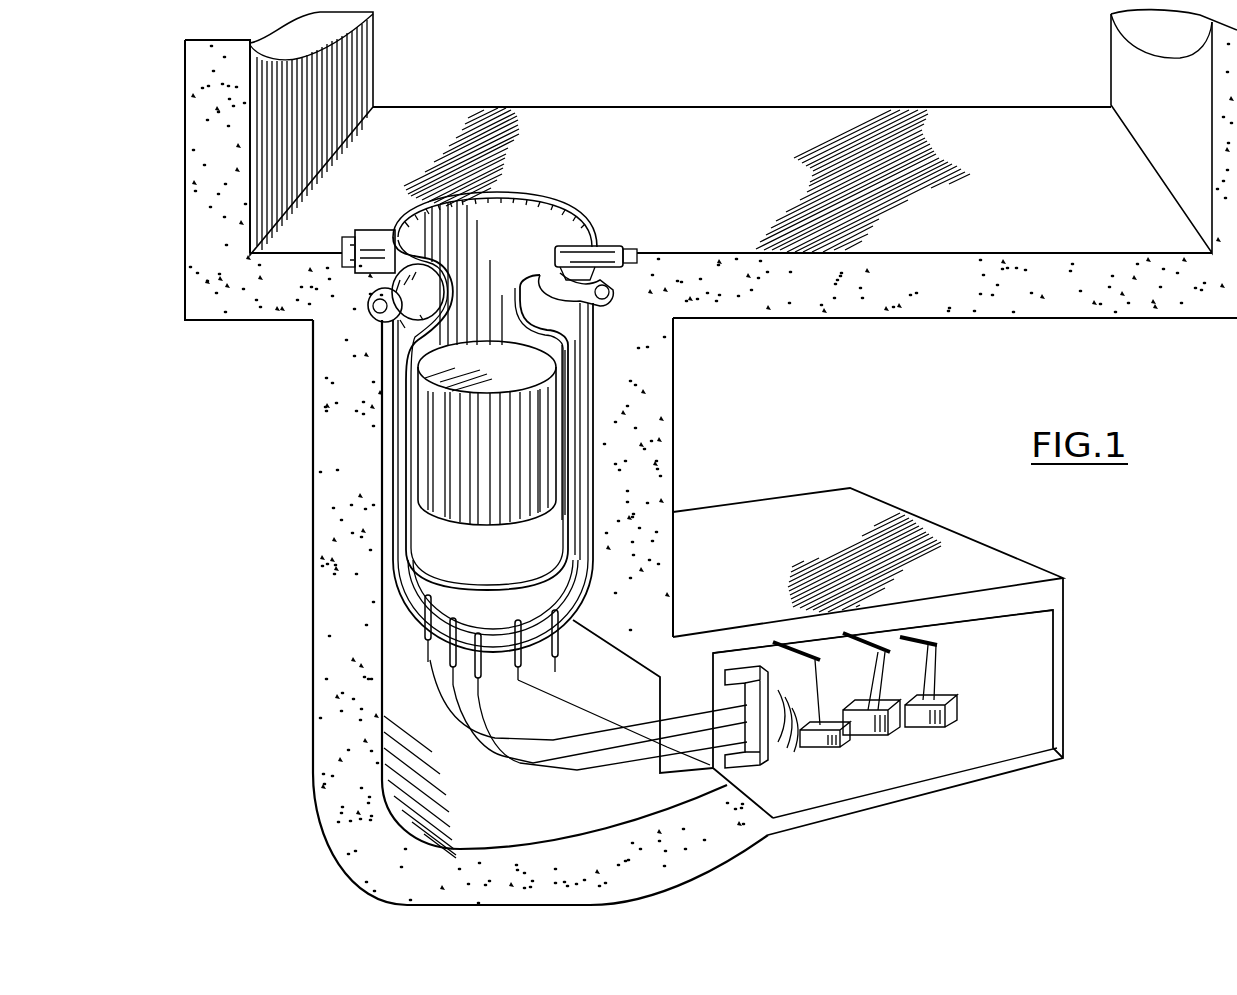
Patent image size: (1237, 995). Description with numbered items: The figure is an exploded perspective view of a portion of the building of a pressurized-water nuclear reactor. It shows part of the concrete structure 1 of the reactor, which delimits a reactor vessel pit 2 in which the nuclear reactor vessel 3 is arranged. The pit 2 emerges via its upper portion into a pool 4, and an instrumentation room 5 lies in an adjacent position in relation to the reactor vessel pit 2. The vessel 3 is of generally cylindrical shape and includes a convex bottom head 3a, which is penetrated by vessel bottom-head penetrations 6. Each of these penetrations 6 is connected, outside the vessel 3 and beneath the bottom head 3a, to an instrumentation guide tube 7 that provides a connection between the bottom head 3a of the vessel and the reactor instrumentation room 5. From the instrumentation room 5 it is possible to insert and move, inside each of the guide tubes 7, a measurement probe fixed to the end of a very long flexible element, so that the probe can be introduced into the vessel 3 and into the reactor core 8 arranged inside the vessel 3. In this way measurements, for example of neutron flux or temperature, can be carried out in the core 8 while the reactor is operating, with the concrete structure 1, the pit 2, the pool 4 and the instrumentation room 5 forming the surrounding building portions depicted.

The concrete structure 1 is at (652, 482).
The reactor vessel pit 2 is at (540, 612).
The nuclear reactor vessel 3 is at (583, 357).
The convex bottom head 3a is at (413, 585).
The pool 4 is at (742, 179).
The instrumentation room 5 is at (868, 661).
The vessel bottom-head penetrations 6 is at (555, 615).
The instrumentation guide tube 7 is at (577, 770).
The reactor core 8 is at (432, 473).